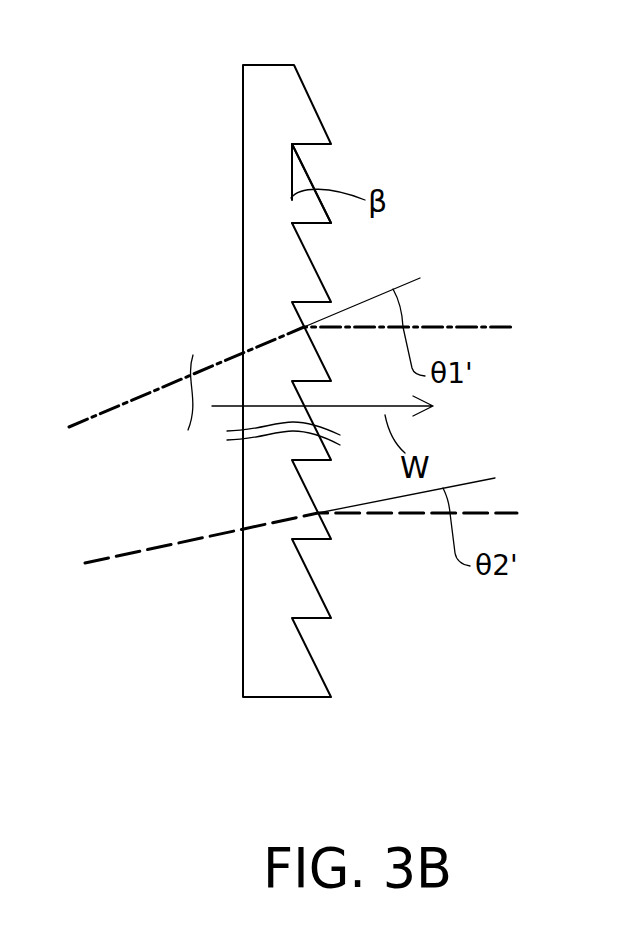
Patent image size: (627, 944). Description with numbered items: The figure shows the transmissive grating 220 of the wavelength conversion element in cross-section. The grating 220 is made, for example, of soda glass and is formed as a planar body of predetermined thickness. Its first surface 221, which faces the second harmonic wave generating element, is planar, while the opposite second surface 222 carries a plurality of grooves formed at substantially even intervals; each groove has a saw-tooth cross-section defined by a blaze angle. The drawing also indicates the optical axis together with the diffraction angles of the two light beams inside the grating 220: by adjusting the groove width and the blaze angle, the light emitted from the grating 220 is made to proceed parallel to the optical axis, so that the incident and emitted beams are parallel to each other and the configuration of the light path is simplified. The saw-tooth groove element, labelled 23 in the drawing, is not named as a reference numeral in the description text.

The transmissive grating 220 is at (192, 66).
The prism tooth 23 is at (346, 267).
The first surface 221 is at (170, 247).
The second surface 222 is at (495, 446).